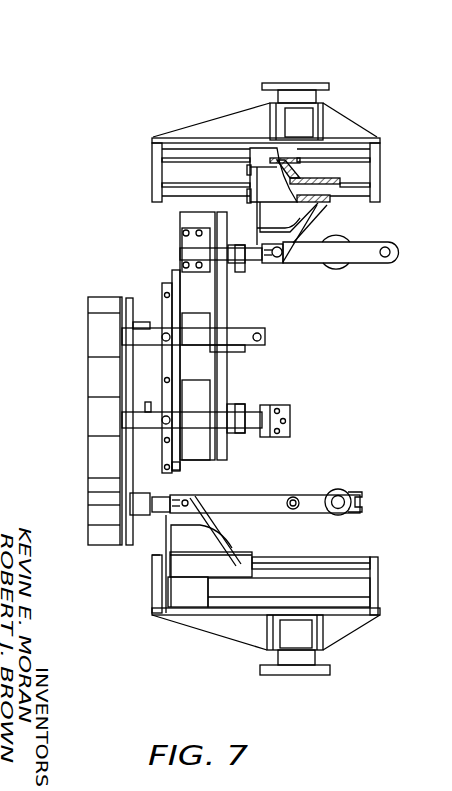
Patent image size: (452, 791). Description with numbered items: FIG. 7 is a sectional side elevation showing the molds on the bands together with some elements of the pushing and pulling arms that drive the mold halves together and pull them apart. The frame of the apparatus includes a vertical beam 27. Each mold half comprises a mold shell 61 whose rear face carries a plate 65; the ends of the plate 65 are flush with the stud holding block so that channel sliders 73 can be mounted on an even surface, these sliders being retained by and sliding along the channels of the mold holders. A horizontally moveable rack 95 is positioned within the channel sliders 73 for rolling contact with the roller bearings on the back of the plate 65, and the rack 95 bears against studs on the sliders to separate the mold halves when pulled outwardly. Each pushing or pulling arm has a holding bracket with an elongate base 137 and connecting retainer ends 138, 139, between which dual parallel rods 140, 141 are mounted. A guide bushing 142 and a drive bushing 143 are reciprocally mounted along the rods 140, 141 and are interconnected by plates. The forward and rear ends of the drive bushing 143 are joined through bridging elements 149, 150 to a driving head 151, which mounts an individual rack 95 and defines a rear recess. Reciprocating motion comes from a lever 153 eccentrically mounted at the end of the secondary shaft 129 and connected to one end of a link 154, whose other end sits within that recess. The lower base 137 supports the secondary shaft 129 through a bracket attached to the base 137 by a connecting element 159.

The vertical beam 27 is at (299, 213).
The mold shell 61 is at (115, 297).
The plate 65 is at (130, 300).
The channel slider 73 is at (100, 325).
The horizontally moveable rack 95 is at (140, 322).
The secondary shaft 129 is at (340, 500).
The elongate base 137 is at (348, 615).
The retainer end 138 is at (374, 580).
The retainer end 139 is at (155, 615).
The parallel rod 140 is at (362, 602).
The parallel rod 141 is at (313, 565).
The guide bushing 142 is at (198, 607).
The drive bushing 143 is at (240, 570).
The bridging element 149 is at (222, 540).
The bridging element 150 is at (155, 557).
The driving head 151 is at (150, 517).
The lever 153 is at (362, 498).
The link 154 is at (218, 497).
The connecting element 159 is at (268, 655).